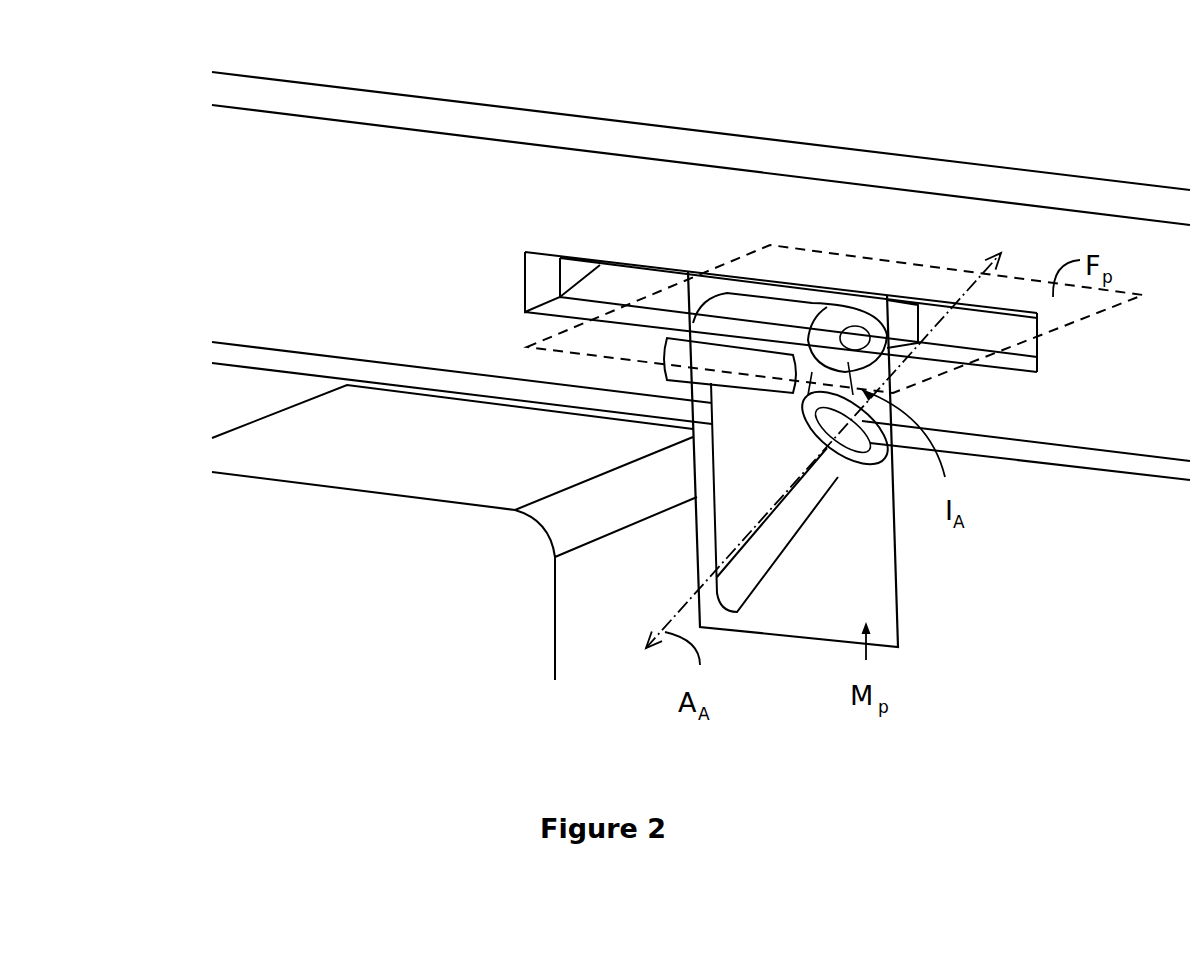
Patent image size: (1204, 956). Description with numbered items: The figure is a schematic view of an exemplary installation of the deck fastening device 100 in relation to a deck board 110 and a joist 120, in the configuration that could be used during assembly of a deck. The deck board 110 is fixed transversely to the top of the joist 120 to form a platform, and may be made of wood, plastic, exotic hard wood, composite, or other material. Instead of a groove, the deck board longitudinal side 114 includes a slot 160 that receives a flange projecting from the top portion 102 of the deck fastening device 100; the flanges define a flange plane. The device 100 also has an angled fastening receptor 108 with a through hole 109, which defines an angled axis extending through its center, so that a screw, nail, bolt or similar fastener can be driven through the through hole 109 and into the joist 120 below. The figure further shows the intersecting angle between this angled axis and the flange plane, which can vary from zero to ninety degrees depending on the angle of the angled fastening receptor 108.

The deck fastening device 100 is at (735, 506).
The top portion 102 is at (790, 344).
The angled fastening receptor 108 is at (751, 475).
The through hole 109 is at (855, 468).
The deck board 110 is at (1068, 132).
The deck board longitudinal side 114 is at (314, 247).
The joist 120 is at (417, 578).
The slot 160 is at (996, 348).